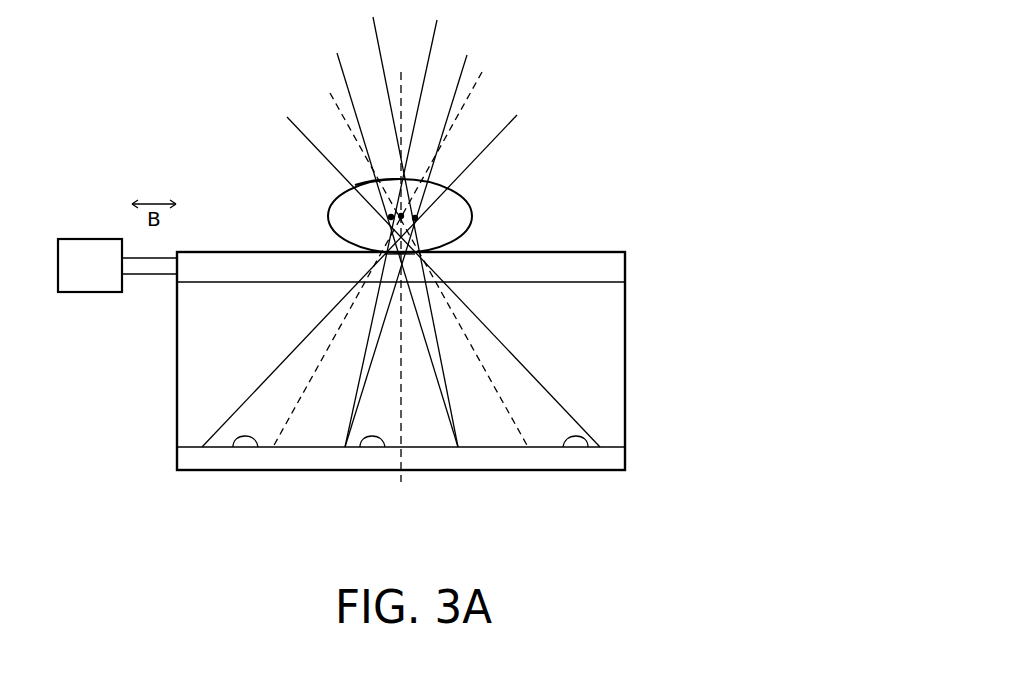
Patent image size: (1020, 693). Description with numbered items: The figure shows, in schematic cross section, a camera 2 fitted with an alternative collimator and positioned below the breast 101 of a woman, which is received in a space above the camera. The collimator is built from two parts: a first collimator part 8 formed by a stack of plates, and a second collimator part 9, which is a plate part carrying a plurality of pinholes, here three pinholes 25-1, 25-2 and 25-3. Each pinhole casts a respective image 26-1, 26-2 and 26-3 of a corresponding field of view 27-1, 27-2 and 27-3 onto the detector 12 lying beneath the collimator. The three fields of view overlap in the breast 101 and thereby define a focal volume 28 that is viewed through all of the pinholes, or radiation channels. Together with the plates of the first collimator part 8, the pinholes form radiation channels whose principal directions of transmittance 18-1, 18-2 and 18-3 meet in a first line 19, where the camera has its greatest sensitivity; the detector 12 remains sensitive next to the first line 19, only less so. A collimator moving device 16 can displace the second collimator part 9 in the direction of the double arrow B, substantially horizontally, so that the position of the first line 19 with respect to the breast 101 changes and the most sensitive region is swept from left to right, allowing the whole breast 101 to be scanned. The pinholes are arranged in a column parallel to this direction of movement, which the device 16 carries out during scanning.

The camera 2 is at (128, 344).
The first collimator part 8 is at (626, 340).
The second collimator part 9 is at (626, 269).
The detector 12 is at (626, 463).
The collimator moving device 16 is at (88, 250).
The principal direction of transmittance 18-1 is at (288, 420).
The principal direction of transmittance 18-2 is at (402, 421).
The principal direction of transmittance 18-3 is at (513, 420).
The first line 19 is at (420, 217).
The pinhole 25-1 is at (380, 253).
The pinhole 25-2 is at (392, 256).
The pinhole 25-3 is at (425, 252).
The image 26-1 is at (233, 447).
The image 26-2 is at (360, 447).
The image 26-3 is at (588, 447).
The field of view 27-1 is at (532, 103).
The field of view 27-2 is at (422, 33).
The field of view 27-3 is at (322, 100).
The focal volume 28 is at (365, 185).
The breast 101 is at (458, 191).